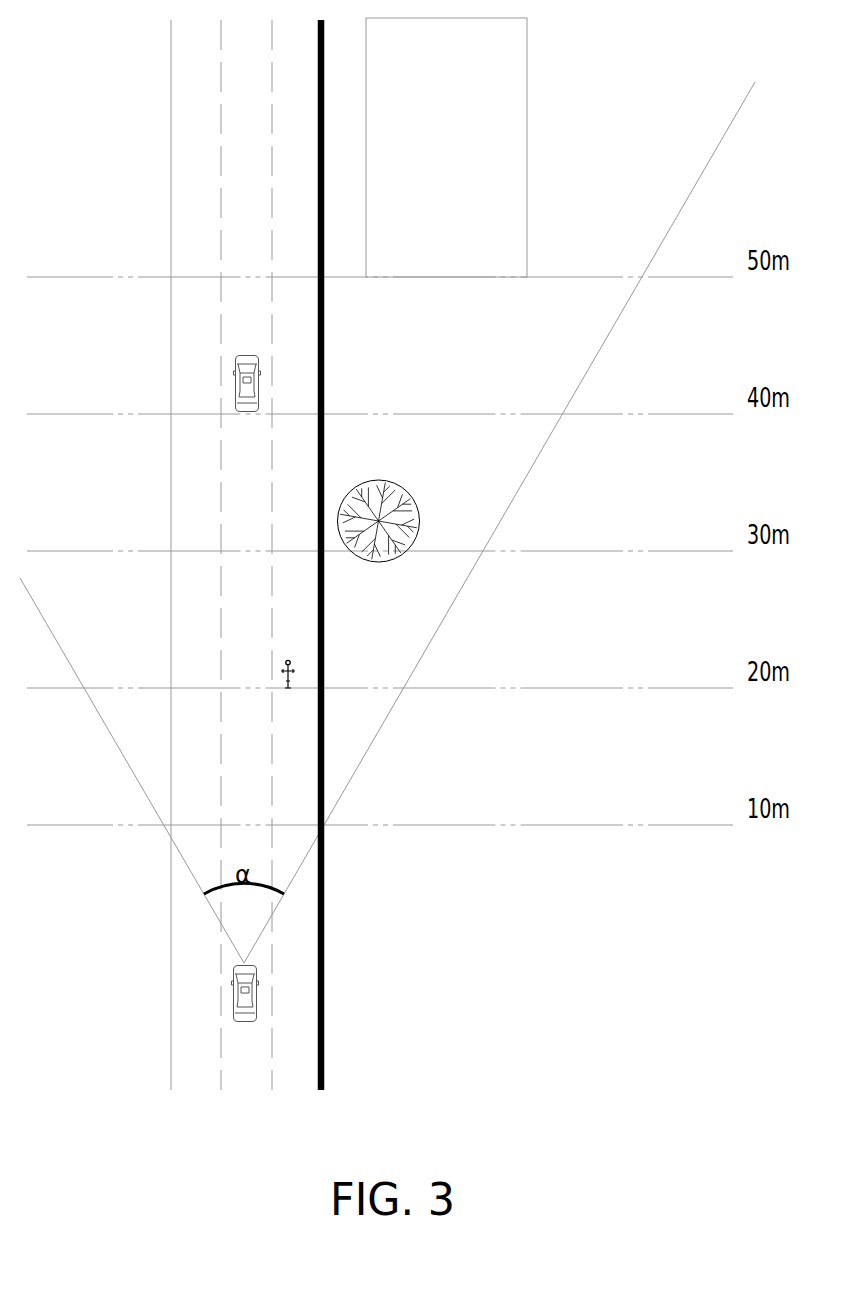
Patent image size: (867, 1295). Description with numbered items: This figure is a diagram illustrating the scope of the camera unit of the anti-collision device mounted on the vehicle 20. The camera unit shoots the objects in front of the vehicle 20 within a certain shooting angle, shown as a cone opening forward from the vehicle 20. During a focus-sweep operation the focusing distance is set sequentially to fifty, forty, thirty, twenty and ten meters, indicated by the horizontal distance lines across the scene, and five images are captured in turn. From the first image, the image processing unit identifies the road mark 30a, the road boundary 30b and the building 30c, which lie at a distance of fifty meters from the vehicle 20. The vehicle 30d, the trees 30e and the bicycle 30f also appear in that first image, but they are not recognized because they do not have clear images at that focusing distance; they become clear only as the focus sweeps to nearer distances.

The vehicle 20 is at (257, 1020).
The road mark 30a is at (272, 232).
The road boundary 30b is at (324, 408).
The building 30c is at (503, 125).
The vehicle 30d is at (248, 360).
The trees 30e is at (390, 484).
The bicycle 30f is at (293, 664).